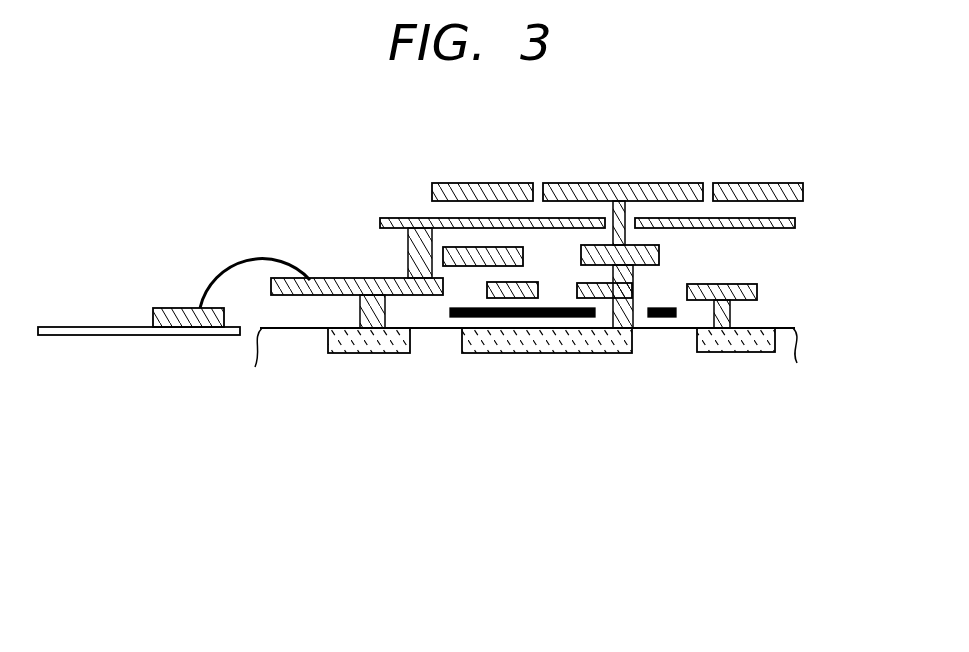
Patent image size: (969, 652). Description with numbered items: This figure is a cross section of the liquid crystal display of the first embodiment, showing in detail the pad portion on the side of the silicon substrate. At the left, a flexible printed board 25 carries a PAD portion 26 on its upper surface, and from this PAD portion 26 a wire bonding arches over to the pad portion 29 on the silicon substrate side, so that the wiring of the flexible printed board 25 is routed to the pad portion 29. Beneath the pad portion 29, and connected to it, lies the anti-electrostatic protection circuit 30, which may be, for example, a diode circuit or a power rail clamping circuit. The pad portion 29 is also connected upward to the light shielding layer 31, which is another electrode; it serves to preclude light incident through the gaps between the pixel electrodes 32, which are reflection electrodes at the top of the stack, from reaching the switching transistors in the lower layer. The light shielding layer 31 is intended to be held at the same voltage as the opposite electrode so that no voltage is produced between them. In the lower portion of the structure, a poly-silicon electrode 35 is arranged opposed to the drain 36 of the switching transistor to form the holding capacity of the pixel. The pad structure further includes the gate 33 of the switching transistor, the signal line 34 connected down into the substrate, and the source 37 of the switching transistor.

The flexible printed board 25 is at (129, 331).
The PAD portion 26 is at (178, 306).
The pad portion 29 is at (342, 288).
The anti-electrostatic protection circuit 30 is at (355, 354).
The light shielding layer 31 is at (405, 216).
The pixel electrodes 32 is at (652, 182).
The gate 33 is at (663, 318).
The signal line 34 is at (748, 284).
The poly-silicon electrode 35 is at (517, 318).
The drain 36 is at (590, 354).
The source 37 is at (752, 353).